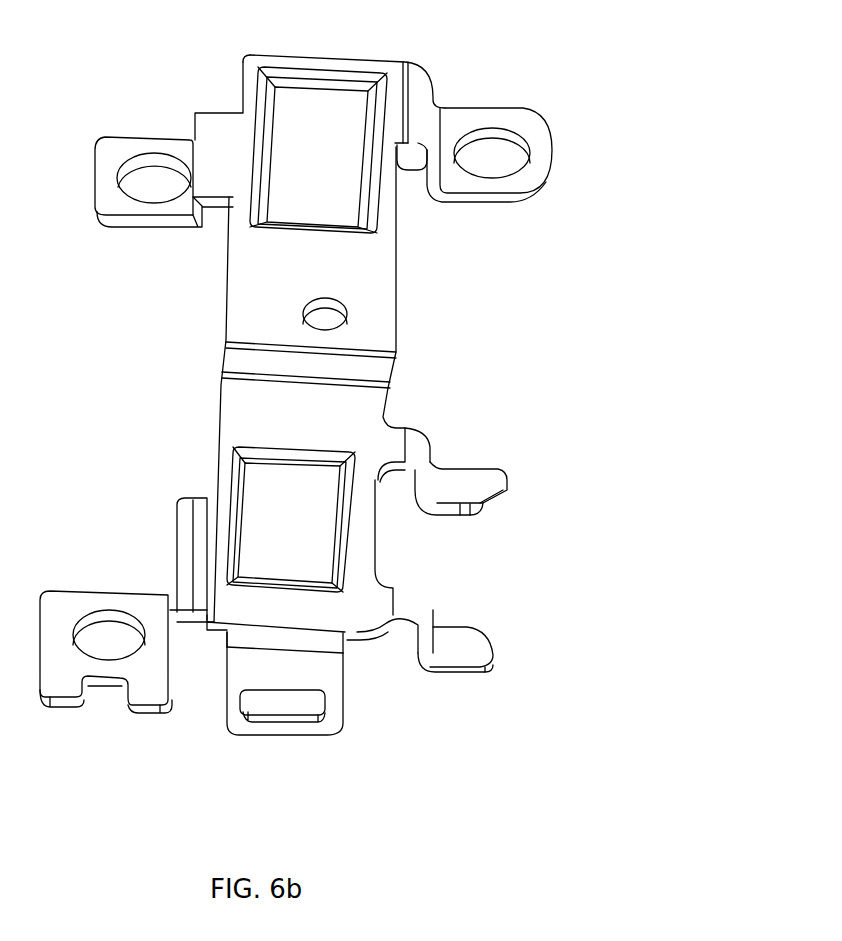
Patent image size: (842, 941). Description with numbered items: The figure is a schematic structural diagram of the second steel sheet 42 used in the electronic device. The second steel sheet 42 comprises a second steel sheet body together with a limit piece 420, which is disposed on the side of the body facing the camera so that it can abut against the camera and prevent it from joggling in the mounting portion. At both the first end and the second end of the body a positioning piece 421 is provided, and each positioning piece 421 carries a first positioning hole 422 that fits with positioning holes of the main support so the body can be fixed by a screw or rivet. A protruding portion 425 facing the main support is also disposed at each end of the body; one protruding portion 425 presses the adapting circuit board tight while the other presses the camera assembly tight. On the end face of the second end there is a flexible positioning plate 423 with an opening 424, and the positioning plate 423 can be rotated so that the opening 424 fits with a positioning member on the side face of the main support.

The second steel sheet 42 is at (232, 288).
The limit piece 420 is at (470, 482).
The positioning piece 421 is at (457, 127).
The first positioning hole 422 is at (503, 155).
The positioning plate 423 is at (242, 663).
The opening 424 is at (295, 705).
The protruding portion 425 is at (305, 112).